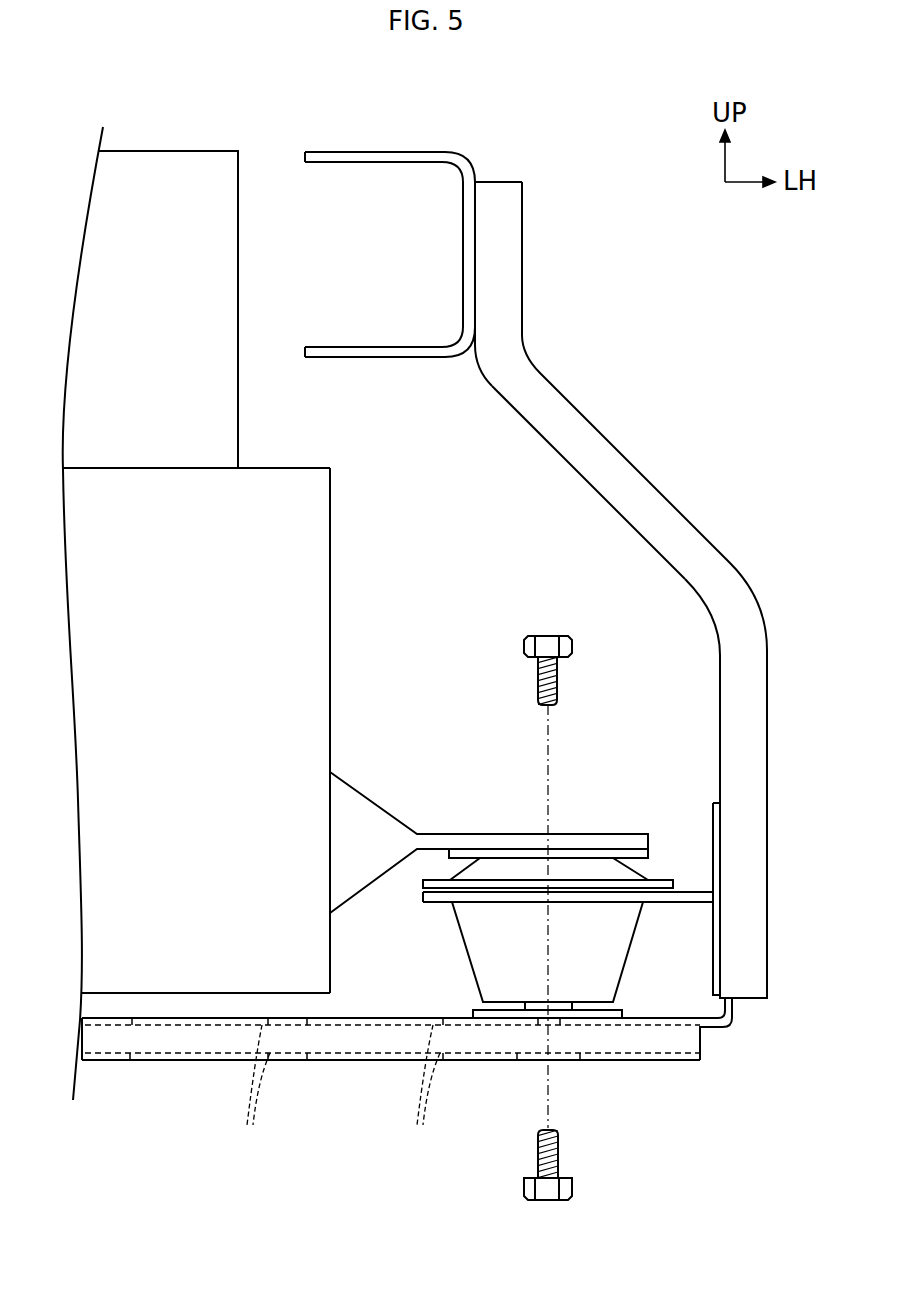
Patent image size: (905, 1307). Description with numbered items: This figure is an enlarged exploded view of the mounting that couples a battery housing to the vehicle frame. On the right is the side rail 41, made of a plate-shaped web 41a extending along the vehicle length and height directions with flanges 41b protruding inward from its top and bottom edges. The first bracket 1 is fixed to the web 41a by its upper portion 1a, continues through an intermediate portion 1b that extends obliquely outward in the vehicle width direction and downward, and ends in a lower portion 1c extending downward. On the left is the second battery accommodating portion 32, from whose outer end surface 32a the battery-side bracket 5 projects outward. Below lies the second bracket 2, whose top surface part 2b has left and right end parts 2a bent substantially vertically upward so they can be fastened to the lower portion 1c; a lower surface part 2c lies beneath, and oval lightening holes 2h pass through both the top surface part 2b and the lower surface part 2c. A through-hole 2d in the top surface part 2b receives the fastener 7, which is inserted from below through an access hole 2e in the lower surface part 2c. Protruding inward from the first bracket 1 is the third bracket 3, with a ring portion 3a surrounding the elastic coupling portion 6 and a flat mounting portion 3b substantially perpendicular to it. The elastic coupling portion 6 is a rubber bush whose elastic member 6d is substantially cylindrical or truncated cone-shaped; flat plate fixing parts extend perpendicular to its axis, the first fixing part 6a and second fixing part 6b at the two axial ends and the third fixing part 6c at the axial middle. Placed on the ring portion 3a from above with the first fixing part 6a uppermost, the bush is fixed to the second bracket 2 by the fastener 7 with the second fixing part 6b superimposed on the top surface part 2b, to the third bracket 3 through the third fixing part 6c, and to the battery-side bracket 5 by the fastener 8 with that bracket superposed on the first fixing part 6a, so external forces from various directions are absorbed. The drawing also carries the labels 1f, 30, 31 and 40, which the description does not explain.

The first bracket 1 is at (659, 590).
The upper portion 1a is at (522, 243).
The intermediate portion 1b is at (622, 455).
The lower portion 1c is at (767, 822).
The inner surface of inclined portion 1f is at (642, 511).
The second bracket 2 is at (454, 1068).
The end parts 2a is at (735, 1005).
The top surface part 2b is at (370, 1018).
The lower surface part 2c is at (365, 1061).
The through-holes 2d is at (555, 1020).
The access holes 2e is at (517, 1060).
The lightening holes 2h is at (336, 1089).
The third bracket 3 is at (555, 889).
The ring portion 3a is at (430, 897).
The mounting portion 3b is at (713, 828).
The battery-side bracket 5 is at (503, 821).
The elastic coupling portion 6 is at (620, 896).
The first fixing part 6a is at (535, 849).
The second fixing part 6b is at (623, 1015).
The third fixing part 6c is at (446, 858).
The elastic member 6d is at (585, 868).
The fastener 7 is at (598, 1164).
The fastener 8 is at (588, 684).
The unit 30 is at (250, 524).
The upper component 31 is at (153, 327).
The second battery accommodating portion 32 is at (250, 730).
The end surface 32a is at (330, 577).
The retaining member 40 is at (449, 255).
The side rail 41 is at (449, 235).
The web 41a is at (468, 282).
The flange 41b is at (388, 153).